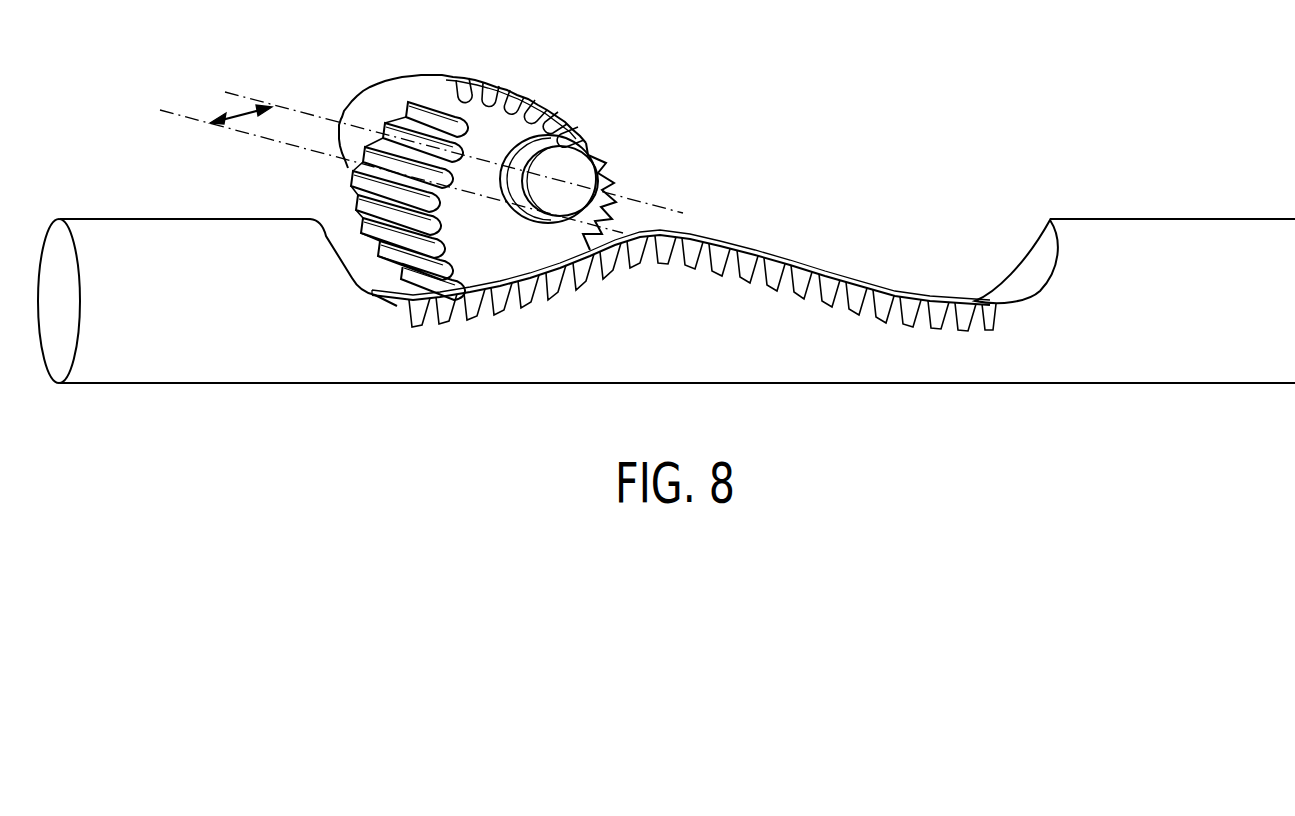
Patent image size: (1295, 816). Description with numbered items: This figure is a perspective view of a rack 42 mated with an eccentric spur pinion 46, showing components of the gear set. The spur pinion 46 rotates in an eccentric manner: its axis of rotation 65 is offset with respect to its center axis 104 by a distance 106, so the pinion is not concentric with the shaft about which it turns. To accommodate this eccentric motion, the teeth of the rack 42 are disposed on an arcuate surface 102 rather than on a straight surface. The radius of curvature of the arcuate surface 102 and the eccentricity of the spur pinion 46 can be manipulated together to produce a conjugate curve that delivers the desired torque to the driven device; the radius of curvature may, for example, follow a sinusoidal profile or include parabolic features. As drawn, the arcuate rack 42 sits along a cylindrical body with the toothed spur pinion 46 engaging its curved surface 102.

The rack gear 42 is at (1103, 230).
The arcuate surface 102 is at (807, 290).
The spur pinion 46 is at (560, 113).
The axis of rotation 65 is at (308, 113).
The center axis 104 is at (270, 140).
The distance 106 is at (237, 112).